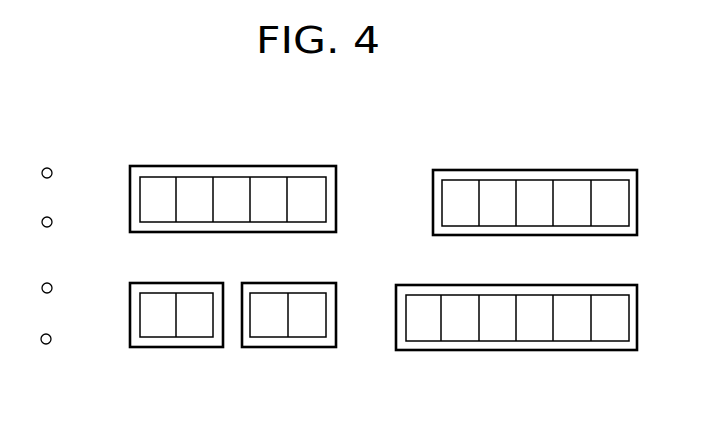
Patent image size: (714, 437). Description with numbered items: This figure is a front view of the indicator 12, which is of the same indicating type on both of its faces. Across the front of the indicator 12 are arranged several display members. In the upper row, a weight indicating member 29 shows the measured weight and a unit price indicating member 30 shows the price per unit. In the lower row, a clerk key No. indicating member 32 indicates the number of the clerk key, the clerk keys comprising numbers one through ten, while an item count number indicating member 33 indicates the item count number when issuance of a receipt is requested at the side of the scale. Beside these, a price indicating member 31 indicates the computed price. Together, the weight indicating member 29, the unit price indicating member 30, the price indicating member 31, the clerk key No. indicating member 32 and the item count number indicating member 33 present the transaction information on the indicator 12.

The indicator 12 is at (367, 246).
The weight indicating member 29 is at (318, 200).
The unit price indicating member 30 is at (619, 194).
The price indicating member 31 is at (500, 330).
The clerk key No. indicating member 32 is at (165, 325).
The item count number indicating member 33 is at (273, 325).